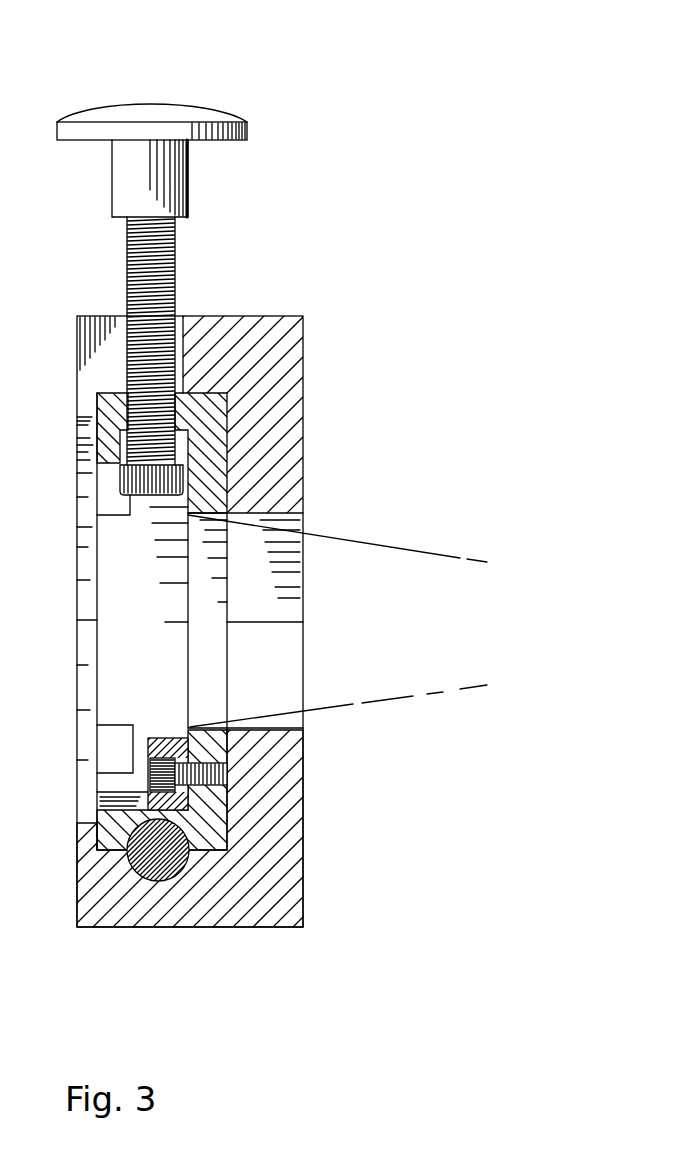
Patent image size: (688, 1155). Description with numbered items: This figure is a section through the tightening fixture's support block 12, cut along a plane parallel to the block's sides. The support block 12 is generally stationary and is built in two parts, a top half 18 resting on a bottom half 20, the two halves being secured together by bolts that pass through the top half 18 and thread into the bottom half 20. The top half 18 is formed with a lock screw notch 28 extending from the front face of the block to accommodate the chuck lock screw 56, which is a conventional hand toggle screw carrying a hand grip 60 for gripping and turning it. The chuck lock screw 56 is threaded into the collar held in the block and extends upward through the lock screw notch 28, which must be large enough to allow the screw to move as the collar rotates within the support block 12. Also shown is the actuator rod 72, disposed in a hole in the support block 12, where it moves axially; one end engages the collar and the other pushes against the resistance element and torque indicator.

The support block 12 is at (195, 928).
The top half 18 is at (280, 383).
The bottom half 20 is at (277, 845).
The lock screw notch 28 is at (170, 353).
The chuck lock screw 56 is at (150, 247).
The hand grip 60 is at (148, 113).
The actuator rod 72 is at (155, 877).